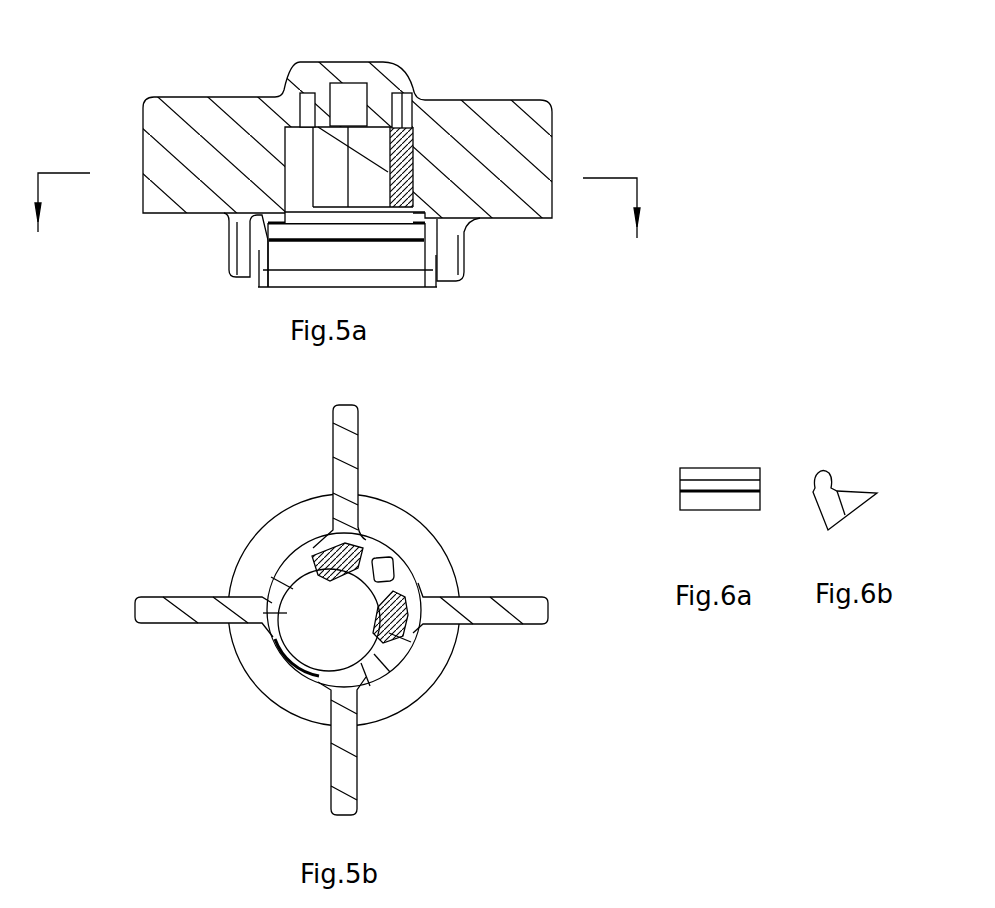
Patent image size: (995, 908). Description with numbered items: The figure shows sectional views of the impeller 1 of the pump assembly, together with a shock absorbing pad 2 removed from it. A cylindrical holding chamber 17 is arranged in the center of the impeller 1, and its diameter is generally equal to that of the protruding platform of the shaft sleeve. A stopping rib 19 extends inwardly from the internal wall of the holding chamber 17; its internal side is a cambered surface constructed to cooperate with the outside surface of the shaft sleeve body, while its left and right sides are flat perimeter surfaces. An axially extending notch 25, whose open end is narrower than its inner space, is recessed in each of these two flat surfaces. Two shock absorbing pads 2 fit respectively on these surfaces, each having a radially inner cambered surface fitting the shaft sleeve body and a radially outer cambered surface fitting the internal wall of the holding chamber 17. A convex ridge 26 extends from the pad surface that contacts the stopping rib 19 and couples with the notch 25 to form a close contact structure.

In FIG. 5a, the impeller 1 is at (523, 220).
In FIG. 5b, the impeller 1 is at (502, 630).
In FIG. 5a, the shock absorbing pad 2 is at (288, 103).
In FIG. 5b, the shock absorbing pad 2 is at (313, 550).
In FIG. 6a, the shock absorbing pad 2 is at (726, 463).
In FIG. 6b, the shock absorbing pad 2 is at (816, 466).
In FIG. 5a, the holding chamber 17 is at (297, 195).
In FIG. 5b, the holding chamber 17 is at (320, 645).
In FIG. 5b, the stopping rib 19 is at (410, 577).
In FIG. 5b, the notch 25 is at (367, 553).
In FIG. 5b, the convex ridge 26 is at (320, 545).